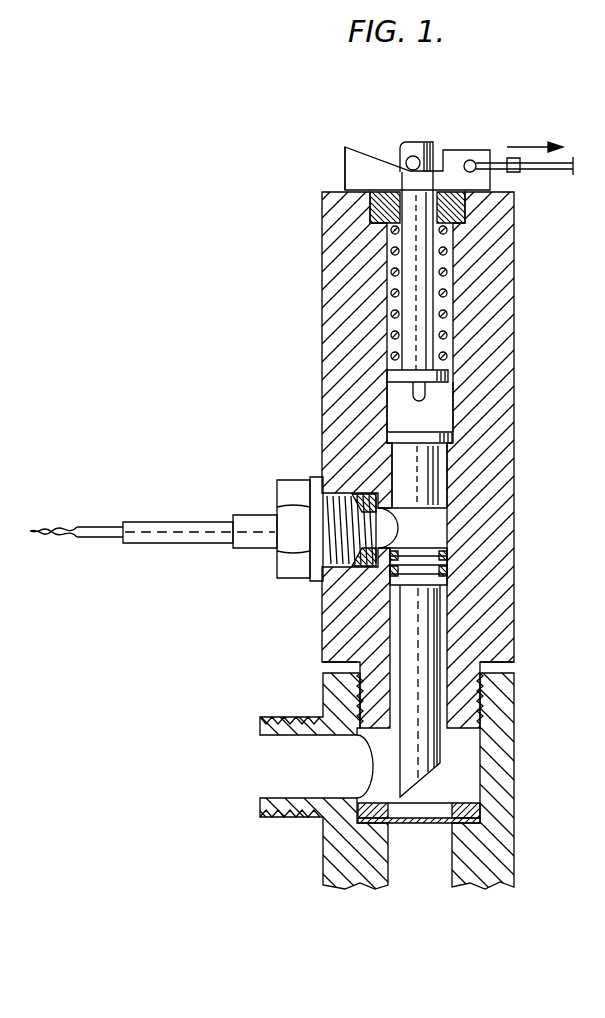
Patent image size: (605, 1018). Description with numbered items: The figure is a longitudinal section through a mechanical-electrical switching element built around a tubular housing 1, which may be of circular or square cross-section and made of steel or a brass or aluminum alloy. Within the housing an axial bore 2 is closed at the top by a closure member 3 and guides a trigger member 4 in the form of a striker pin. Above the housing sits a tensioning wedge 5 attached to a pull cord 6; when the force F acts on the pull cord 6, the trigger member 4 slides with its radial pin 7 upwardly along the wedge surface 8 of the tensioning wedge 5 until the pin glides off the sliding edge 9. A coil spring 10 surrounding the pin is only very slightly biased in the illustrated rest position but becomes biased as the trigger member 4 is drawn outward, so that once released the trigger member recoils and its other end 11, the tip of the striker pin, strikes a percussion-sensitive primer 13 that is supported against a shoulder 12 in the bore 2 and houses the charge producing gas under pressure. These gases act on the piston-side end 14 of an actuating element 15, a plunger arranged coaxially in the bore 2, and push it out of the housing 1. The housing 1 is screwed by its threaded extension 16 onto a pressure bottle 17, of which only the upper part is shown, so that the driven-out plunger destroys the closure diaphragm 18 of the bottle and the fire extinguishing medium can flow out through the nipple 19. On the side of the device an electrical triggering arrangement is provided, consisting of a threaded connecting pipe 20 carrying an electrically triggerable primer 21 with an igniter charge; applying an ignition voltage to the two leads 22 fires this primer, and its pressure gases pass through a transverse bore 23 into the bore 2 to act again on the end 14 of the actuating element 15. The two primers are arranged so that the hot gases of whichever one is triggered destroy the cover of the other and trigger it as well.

The tubular housing 1 is at (488, 358).
The axial bore 2 is at (433, 423).
The closure member 3 is at (447, 205).
The trigger member 4 is at (418, 273).
The tensioning wedge 5 is at (460, 157).
The pull cord 6 is at (567, 160).
The radial pin 7 is at (415, 156).
The wedge surface 8 is at (382, 156).
The sliding edge 9 is at (345, 147).
The coil spring 10 is at (447, 317).
The other end 11 is at (423, 397).
The shoulder 12 is at (387, 455).
The percussion-sensitive primer 13 is at (433, 473).
The end of actuating element 14 is at (433, 542).
The actuating element 15 is at (422, 613).
The threaded extension 16 is at (480, 695).
The pressure bottle 17 is at (492, 855).
The closure diaphragm 18 is at (430, 817).
The nipple 19 is at (282, 752).
The threaded connecting pipe 20 is at (293, 520).
The primer 21 is at (360, 522).
The leads 22 is at (108, 532).
The transverse bore 23 is at (385, 535).